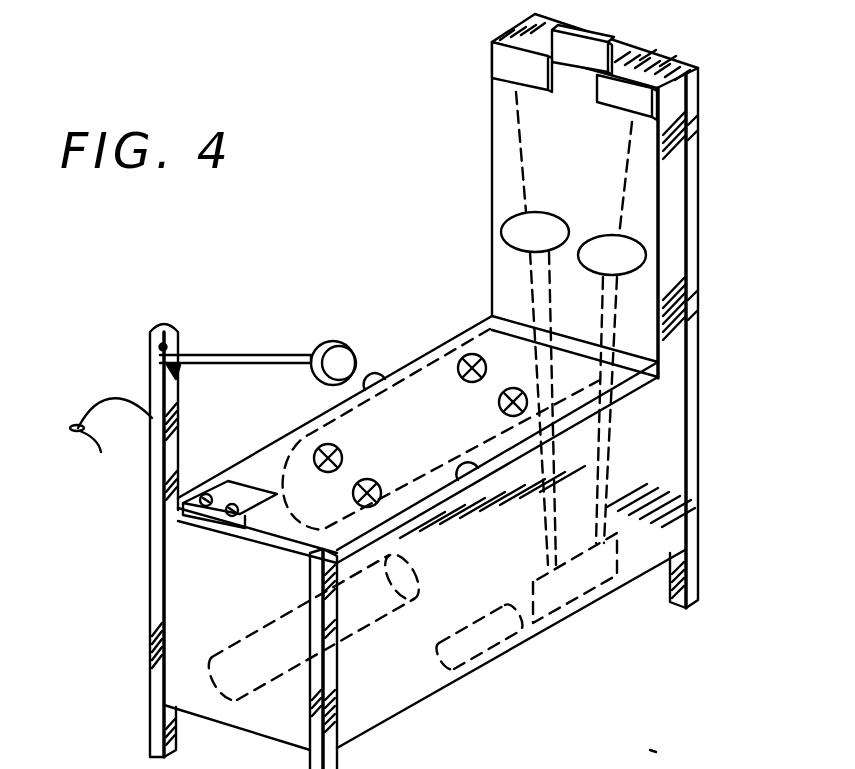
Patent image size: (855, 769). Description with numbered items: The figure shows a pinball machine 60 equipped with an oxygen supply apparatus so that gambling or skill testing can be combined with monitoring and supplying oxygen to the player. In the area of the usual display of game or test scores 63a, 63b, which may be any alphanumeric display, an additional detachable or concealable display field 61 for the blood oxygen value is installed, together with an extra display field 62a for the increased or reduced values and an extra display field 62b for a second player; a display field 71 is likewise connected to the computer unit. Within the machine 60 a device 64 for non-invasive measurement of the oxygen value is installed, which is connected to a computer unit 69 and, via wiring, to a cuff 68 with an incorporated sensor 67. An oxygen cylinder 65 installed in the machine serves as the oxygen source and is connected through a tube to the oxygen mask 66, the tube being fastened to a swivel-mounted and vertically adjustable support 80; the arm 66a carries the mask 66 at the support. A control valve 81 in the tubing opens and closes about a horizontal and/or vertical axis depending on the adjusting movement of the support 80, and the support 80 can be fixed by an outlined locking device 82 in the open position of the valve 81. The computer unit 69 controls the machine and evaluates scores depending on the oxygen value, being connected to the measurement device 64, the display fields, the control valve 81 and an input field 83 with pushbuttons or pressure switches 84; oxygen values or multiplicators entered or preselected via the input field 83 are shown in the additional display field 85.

The pinball machine 60 is at (280, 278).
The display field for the blood oxygen value 61 is at (608, 40).
The display field for the increased or reduced values 62a is at (491, 63).
The display field for a second player 62b is at (658, 100).
The display of game or test scores 63a is at (502, 226).
The display of game or test scores 63b is at (646, 256).
The device for non-invasive measurement of the oxygen value 64 is at (490, 642).
The oxygen cylinder 65 is at (363, 627).
The oxygen mask 66 is at (340, 342).
The arm 66a is at (294, 352).
The sensor 67 is at (78, 432).
The cuff 68 is at (52, 453).
The computer unit 69 is at (582, 597).
The display field 71 is at (664, 757).
The support 80 is at (150, 622).
The control valve 81 is at (152, 344).
The locking device 82 is at (182, 372).
The input field 83 is at (186, 500).
The pushbuttons or pressure switches 84 is at (200, 505).
The additional display field 85 is at (231, 518).